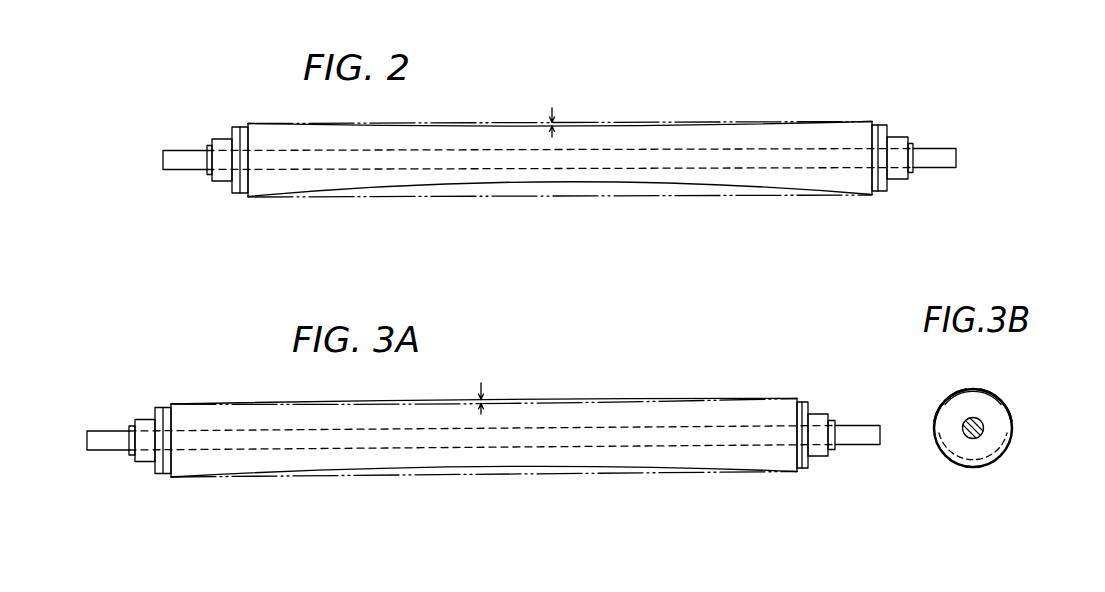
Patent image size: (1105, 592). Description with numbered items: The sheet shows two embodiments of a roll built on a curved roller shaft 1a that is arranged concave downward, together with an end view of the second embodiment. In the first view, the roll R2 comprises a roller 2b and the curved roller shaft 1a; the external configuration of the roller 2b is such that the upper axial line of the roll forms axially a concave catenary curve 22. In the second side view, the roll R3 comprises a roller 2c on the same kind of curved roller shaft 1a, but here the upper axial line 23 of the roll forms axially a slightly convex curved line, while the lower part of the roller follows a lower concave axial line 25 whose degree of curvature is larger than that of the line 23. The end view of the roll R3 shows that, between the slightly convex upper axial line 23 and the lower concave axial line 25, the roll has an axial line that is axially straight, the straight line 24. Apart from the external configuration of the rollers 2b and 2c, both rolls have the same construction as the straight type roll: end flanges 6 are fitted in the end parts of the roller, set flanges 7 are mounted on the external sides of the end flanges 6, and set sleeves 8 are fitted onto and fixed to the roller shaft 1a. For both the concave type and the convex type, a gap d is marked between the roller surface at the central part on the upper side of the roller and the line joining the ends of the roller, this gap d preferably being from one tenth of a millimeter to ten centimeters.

In FIG. 2, the roller shaft 1a is at (947, 160).
In FIG. 3A, the roller shaft 1a is at (870, 438).
In FIG. 3B, the roller shaft 1a is at (970, 438).
In FIG. 2, the roller 2b is at (805, 180).
In FIG. 3A, the roller 2c is at (710, 463).
In FIG. 3B, the roller 2c is at (1010, 425).
In FIG. 2, the end flanges 6 is at (247, 195).
In FIG. 3A, the end flanges 6 is at (172, 475).
In FIG. 2, the set flanges 7 is at (225, 182).
In FIG. 3A, the set flanges 7 is at (152, 462).
In FIG. 2, the set sleeves 8 is at (208, 176).
In FIG. 3A, the set sleeves 8 is at (132, 454).
In FIG. 2, the catenary curve 22 is at (640, 122).
In FIG. 3A, the upper axial line 23 is at (577, 399).
In FIG. 3B, the upper axial line 23 is at (972, 390).
In FIG. 3B, the straight line 24 is at (940, 412).
In FIG. 3A, the lower concave axial line 25 is at (592, 471).
In FIG. 3B, the lower concave axial line 25 is at (990, 465).
In FIG. 2, the roll R2 is at (552, 183).
In FIG. 3A, the roll R3 is at (482, 468).
In FIG. 3B, the roll R3 is at (970, 469).
In FIG. 2, the gap d is at (559, 116).
In FIG. 3A, the gap d is at (489, 394).